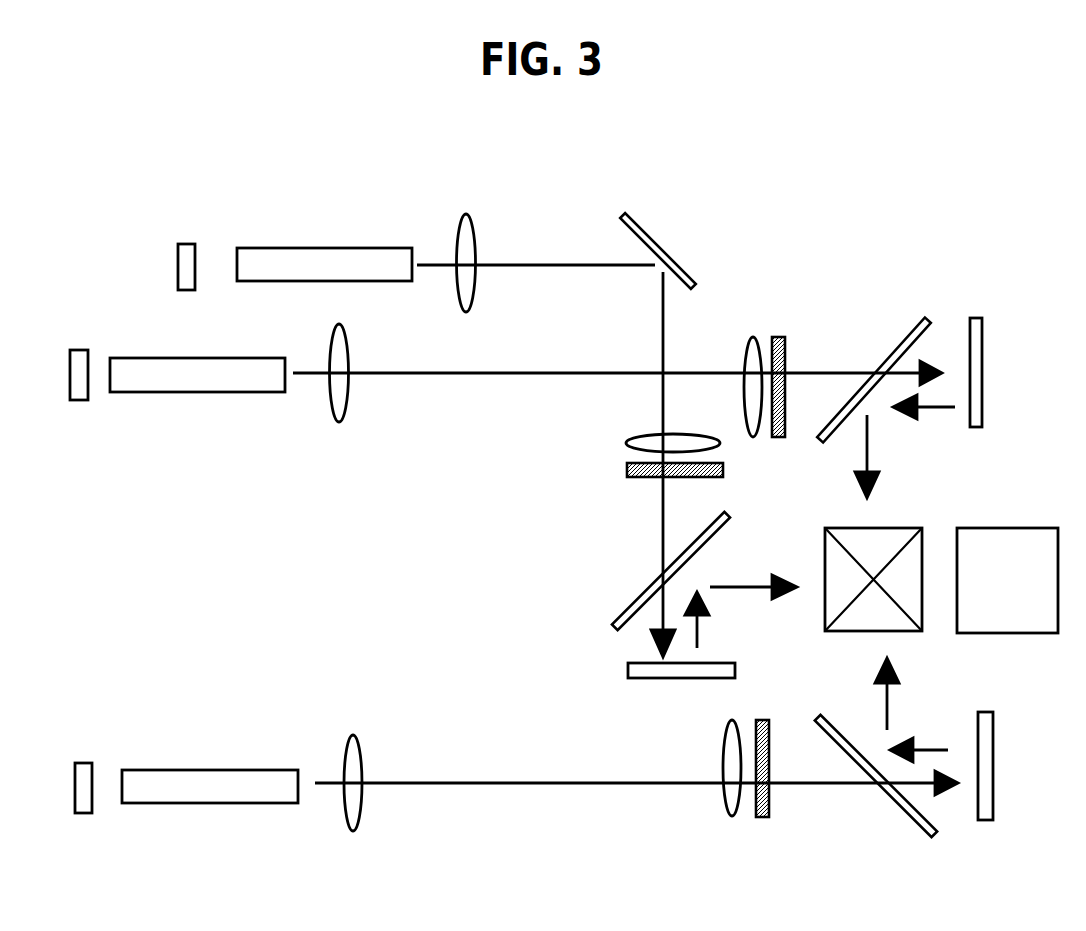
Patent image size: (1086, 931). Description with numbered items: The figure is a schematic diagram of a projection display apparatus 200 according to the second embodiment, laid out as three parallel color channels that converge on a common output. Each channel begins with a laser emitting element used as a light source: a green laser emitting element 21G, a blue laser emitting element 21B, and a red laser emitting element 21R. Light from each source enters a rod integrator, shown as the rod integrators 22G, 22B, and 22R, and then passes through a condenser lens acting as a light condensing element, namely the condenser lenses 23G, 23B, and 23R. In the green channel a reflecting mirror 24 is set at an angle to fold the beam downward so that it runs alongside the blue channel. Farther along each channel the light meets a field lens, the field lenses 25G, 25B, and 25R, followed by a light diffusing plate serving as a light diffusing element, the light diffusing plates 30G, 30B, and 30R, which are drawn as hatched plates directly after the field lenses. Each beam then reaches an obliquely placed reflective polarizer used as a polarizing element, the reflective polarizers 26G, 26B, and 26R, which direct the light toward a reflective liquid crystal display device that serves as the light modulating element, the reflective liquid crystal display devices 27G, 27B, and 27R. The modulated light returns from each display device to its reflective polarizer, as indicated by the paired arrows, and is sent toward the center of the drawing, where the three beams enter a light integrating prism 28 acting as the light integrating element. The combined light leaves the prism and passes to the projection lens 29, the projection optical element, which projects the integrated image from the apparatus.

The projection display apparatus 200 is at (850, 203).
The laser emitting element 21G is at (188, 247).
The rod integrator 22G is at (340, 248).
The condenser lens 23G is at (468, 212).
The reflecting mirror 24 is at (653, 238).
The field lens 25G is at (627, 445).
The light diffusing plate 30G is at (627, 470).
The reflective polarizer 26G is at (630, 607).
The reflective liquid crystal display device 27G is at (628, 672).
The laser emitting element 21B is at (82, 399).
The rod integrator 22B is at (203, 393).
The condenser lens 23B is at (340, 421).
The field lens 25B is at (753, 338).
The light diffusing plate 30B is at (782, 335).
The reflective polarizer 26B is at (908, 337).
The reflective liquid crystal display device 27B is at (977, 317).
The laser emitting element 21R is at (85, 767).
The rod integrator 22R is at (225, 775).
The condenser lens 23R is at (353, 735).
The field lens 25R is at (733, 818).
The light diffusing plate 30R is at (762, 818).
The reflective polarizer 26R is at (897, 812).
The reflective liquid crystal display device 27R is at (983, 822).
The light integrating prism 28 is at (893, 528).
The projection lens 29 is at (1025, 528).